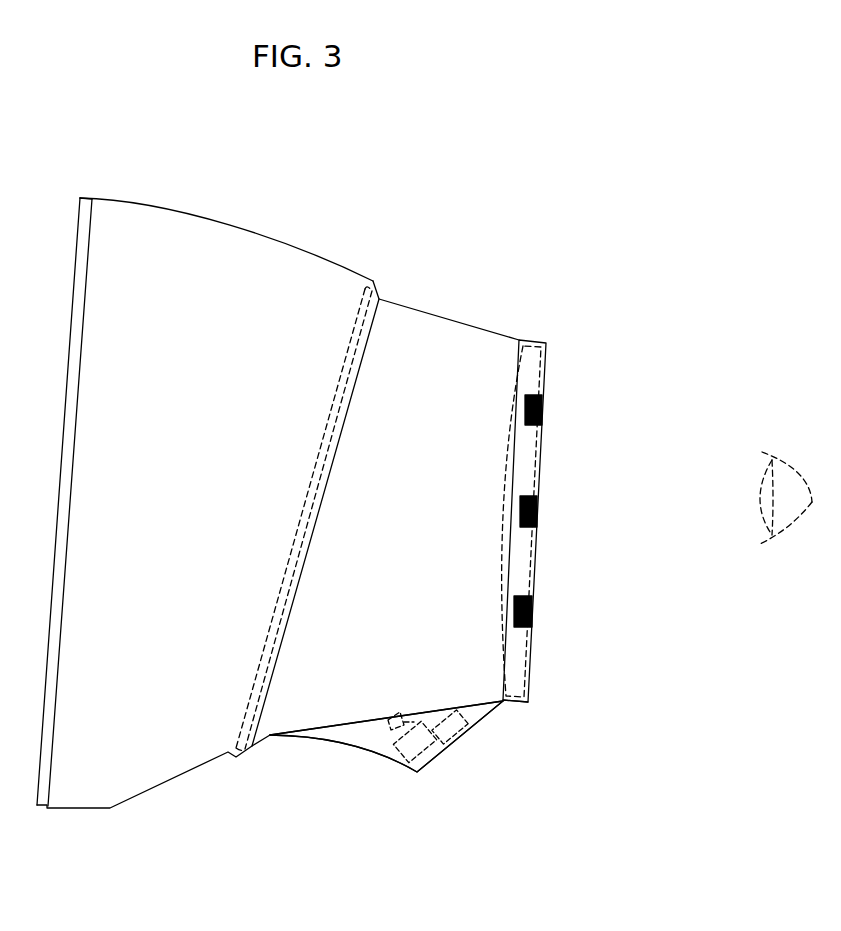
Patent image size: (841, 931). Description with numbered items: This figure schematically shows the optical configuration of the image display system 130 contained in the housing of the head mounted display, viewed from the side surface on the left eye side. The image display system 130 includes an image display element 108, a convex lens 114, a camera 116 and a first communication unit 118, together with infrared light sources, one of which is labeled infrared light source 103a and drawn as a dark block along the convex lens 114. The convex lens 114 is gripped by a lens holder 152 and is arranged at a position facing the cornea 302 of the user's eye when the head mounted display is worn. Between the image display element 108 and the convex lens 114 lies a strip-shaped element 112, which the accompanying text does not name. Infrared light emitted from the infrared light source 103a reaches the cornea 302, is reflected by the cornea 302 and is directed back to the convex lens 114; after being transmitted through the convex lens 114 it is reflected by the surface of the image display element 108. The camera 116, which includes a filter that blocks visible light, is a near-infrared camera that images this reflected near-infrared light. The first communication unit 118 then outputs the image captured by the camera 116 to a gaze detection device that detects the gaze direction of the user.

The image display element 108 is at (90, 198).
The image display system 130 is at (252, 228).
The first guide strip 112 is at (368, 288).
The convex lens 114 is at (535, 343).
The infrared light source 103a is at (543, 408).
The lens holder 152 is at (520, 703).
The camera 116 is at (425, 765).
The first communication unit 118 is at (465, 740).
The cornea 302 is at (755, 517).